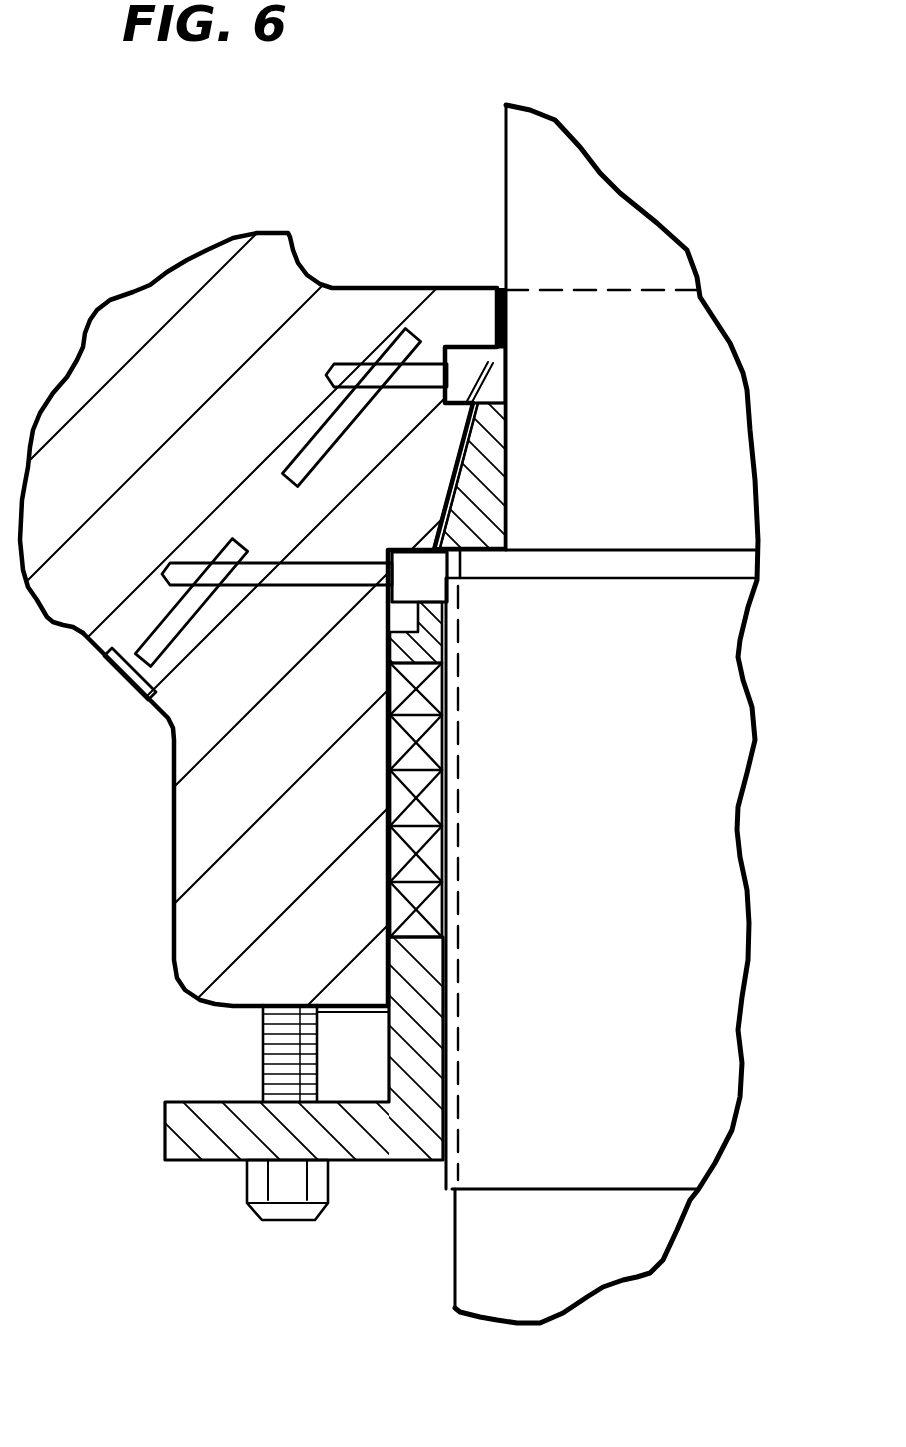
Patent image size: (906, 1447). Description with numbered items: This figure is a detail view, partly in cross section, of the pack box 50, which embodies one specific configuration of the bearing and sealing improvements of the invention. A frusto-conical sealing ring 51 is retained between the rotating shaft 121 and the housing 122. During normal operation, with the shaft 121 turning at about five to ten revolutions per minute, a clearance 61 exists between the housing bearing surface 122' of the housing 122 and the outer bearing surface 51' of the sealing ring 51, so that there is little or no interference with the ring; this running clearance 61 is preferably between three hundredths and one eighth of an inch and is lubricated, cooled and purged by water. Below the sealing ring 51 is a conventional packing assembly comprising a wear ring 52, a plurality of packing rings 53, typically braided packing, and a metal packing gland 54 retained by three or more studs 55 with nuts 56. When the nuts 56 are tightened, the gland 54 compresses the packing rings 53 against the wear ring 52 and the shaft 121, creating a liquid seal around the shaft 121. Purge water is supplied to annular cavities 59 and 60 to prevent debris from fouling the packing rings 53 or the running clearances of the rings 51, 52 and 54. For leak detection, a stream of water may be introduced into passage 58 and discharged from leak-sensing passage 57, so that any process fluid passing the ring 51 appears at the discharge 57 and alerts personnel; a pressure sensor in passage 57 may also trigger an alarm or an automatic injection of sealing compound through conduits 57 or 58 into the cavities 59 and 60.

The shaft 121 is at (713, 307).
The housing 122 is at (258, 418).
The housing bearing surface 122' is at (403, 475).
The pack box 50 is at (268, 800).
The frusto-conical sealing ring 51 is at (474, 475).
The outer bearing surface 51' is at (502, 475).
The wear ring 52 is at (458, 636).
The packing rings 53 is at (460, 810).
The metal packing gland 54 is at (400, 1174).
The studs 55 is at (254, 1050).
The nuts 56 is at (241, 1212).
The leak-sensing passage 57 is at (112, 690).
The passage 58 is at (294, 460).
The annular cavity 59 is at (390, 600).
The annular cavity 60 is at (462, 347).
The clearance 61 is at (508, 386).